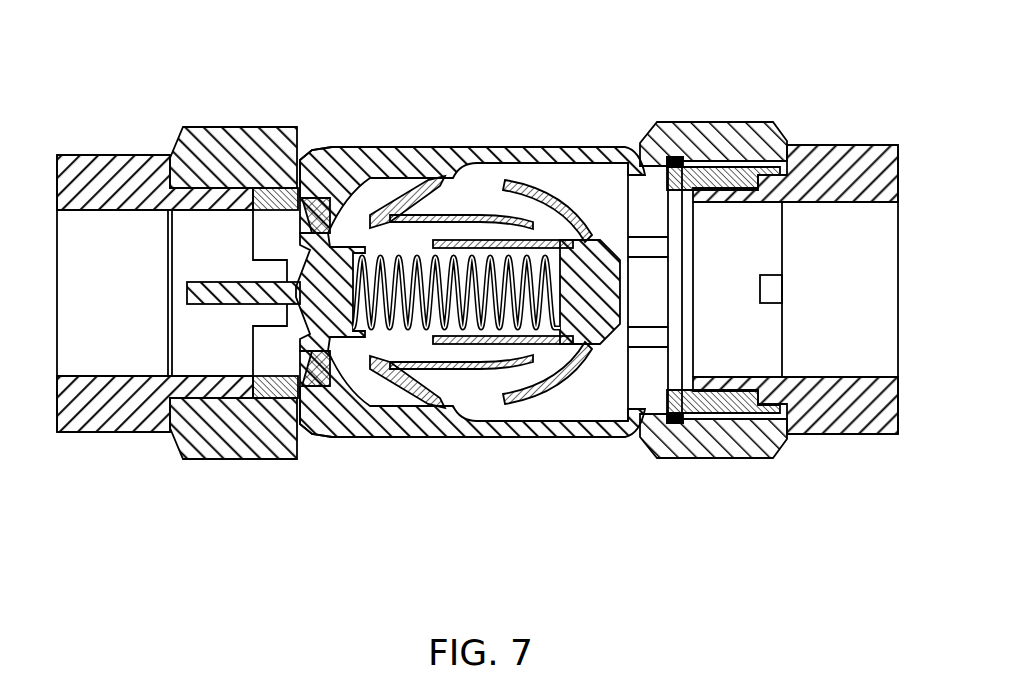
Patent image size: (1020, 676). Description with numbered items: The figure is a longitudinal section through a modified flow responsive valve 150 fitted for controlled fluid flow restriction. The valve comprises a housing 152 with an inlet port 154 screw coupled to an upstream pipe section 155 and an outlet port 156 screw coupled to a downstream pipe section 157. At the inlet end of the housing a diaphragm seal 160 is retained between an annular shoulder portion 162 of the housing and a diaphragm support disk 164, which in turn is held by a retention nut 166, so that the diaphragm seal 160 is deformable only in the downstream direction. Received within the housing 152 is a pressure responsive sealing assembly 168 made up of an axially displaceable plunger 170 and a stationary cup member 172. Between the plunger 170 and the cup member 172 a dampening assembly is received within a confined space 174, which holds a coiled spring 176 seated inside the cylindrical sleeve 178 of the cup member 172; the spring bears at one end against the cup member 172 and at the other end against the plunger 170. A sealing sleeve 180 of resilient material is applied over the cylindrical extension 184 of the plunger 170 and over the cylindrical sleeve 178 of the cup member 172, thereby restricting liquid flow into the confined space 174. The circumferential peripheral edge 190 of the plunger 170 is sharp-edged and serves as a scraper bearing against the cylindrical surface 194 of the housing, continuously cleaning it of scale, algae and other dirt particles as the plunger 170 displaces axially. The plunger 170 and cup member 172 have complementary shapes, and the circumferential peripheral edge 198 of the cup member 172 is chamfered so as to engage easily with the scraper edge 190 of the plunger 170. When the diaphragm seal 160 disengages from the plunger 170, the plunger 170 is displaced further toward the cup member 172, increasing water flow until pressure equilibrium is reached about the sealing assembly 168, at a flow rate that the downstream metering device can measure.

The valve 150 is at (365, 512).
The housing 152 is at (212, 460).
The inlet port 154 is at (205, 332).
The upstream pipe section 155 is at (135, 180).
The outlet port 156 is at (740, 353).
The downstream pipe section 157 is at (840, 413).
The diaphragm seal 160 is at (352, 172).
The annular shoulder portion 162 is at (322, 387).
The diaphragm support disk 164 is at (302, 190).
The retention nut 166 is at (283, 399).
The sealing assembly 168 is at (632, 440).
The plunger 170 is at (343, 348).
The cup member 172 is at (577, 200).
The confined space 174 is at (480, 372).
The coiled spring 176 is at (410, 214).
The cylindrical sleeve 178 is at (560, 408).
The sealing sleeve 180 is at (485, 205).
The cylindrical extension 184 is at (392, 212).
The circumferential peripheral edge 190 is at (455, 346).
The cylindrical surface 194 is at (400, 373).
The circumferential peripheral edge 198 is at (560, 402).